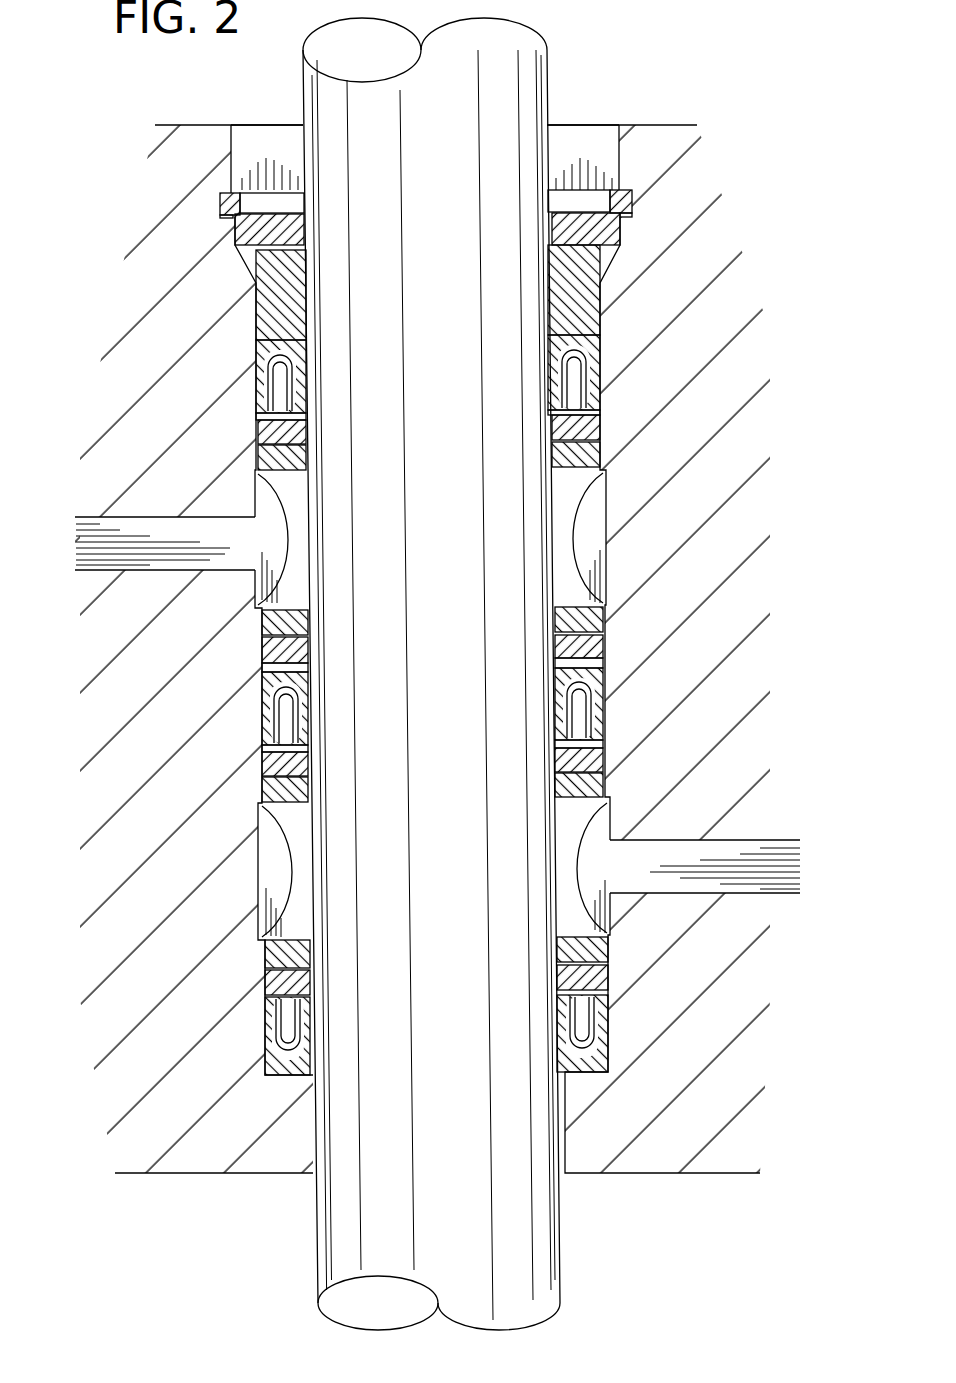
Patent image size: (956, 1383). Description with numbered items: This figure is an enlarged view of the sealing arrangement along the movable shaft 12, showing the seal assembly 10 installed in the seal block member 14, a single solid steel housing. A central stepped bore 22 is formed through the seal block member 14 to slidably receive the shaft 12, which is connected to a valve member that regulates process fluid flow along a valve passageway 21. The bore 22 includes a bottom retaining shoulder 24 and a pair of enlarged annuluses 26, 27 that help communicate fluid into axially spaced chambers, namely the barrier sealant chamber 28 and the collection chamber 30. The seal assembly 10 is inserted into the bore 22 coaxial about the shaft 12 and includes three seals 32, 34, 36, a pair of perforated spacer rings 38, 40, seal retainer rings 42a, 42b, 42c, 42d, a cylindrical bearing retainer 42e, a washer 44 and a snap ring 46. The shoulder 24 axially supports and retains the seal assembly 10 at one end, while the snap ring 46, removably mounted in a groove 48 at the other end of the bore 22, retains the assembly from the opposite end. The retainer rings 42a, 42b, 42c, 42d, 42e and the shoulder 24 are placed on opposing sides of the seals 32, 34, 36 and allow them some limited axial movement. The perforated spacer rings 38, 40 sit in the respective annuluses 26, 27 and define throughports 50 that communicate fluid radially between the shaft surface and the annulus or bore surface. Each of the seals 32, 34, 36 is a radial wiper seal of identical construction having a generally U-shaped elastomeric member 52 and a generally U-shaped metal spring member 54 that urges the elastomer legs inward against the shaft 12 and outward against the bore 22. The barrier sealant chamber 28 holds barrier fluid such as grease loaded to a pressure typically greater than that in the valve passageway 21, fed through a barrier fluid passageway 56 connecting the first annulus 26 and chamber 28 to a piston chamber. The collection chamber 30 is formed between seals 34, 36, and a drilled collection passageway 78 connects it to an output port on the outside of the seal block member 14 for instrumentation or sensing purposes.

The seal assembly 10 is at (586, 124).
The movable shaft 12 is at (290, 75).
The seal block member 14 is at (182, 126).
The valve passageway 21 is at (596, 1226).
The central stepped bore 22 is at (258, 175).
The bottom retaining shoulder 24 is at (270, 1153).
The first annulus 26 is at (610, 913).
The second annulus 27 is at (607, 532).
The barrier sealant chamber 28 is at (700, 878).
The collection chamber 30 is at (587, 532).
The first seal 32 is at (620, 1057).
The second seal 34 is at (616, 708).
The third seal 36 is at (612, 350).
The perforated spacer ring 38 is at (246, 790).
The perforated spacer ring 40 is at (246, 460).
The seal retainer ring 42a is at (590, 978).
The seal retainer ring 42b is at (598, 770).
The seal retainer ring 42c is at (590, 645).
The seal retainer ring 42d is at (590, 430).
The cylindrical bearing retainer 42e is at (600, 290).
The washer 44 is at (598, 222).
The snap ring 46 is at (632, 200).
The groove 48 is at (220, 205).
The throughports 50 is at (300, 538).
The U-shaped elastomeric member 52 is at (286, 1048).
The U-shaped metal spring member 54 is at (296, 1017).
The barrier fluid passageway 56 is at (760, 845).
The drilled collection passageway 78 is at (95, 550).